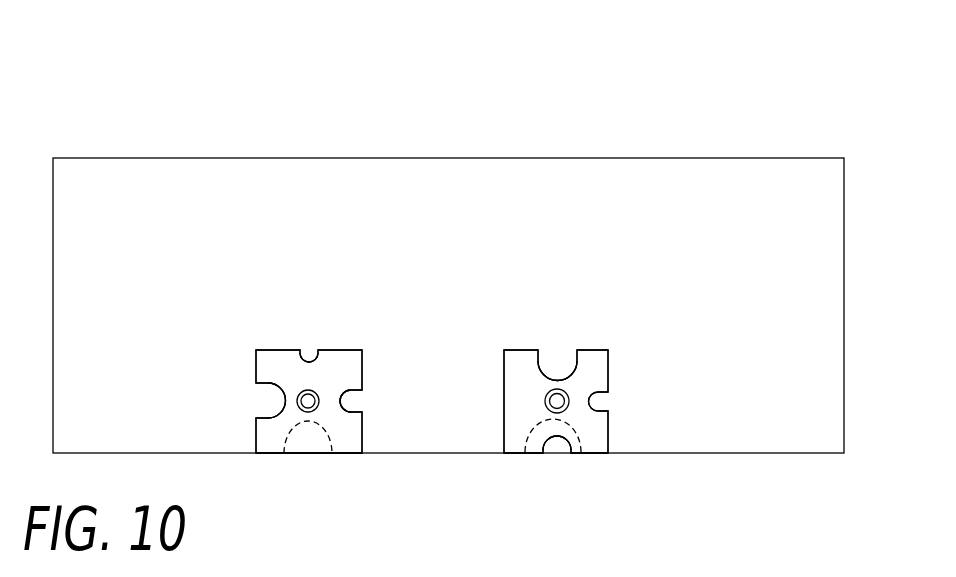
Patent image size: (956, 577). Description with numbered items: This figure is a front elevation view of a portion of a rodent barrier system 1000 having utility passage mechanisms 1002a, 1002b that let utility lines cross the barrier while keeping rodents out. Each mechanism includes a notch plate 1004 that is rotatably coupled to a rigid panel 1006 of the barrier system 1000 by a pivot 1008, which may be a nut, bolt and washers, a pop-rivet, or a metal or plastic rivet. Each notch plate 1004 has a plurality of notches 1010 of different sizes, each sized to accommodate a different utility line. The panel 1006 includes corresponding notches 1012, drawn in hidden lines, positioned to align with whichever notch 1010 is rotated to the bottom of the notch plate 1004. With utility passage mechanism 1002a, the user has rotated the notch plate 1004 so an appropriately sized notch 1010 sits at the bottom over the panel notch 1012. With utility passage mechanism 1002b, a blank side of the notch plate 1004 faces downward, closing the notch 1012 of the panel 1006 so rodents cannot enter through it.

The rodent barrier system 1000 is at (484, 257).
The utility passage mechanism 1002a is at (397, 262).
The utility passage mechanism 1002b is at (685, 270).
The notch plate 1004 is at (347, 350).
The rigid panel 1006 is at (481, 158).
The pivot 1008 is at (306, 390).
The notches 1010 is at (265, 420).
The notches 1012 is at (330, 446).